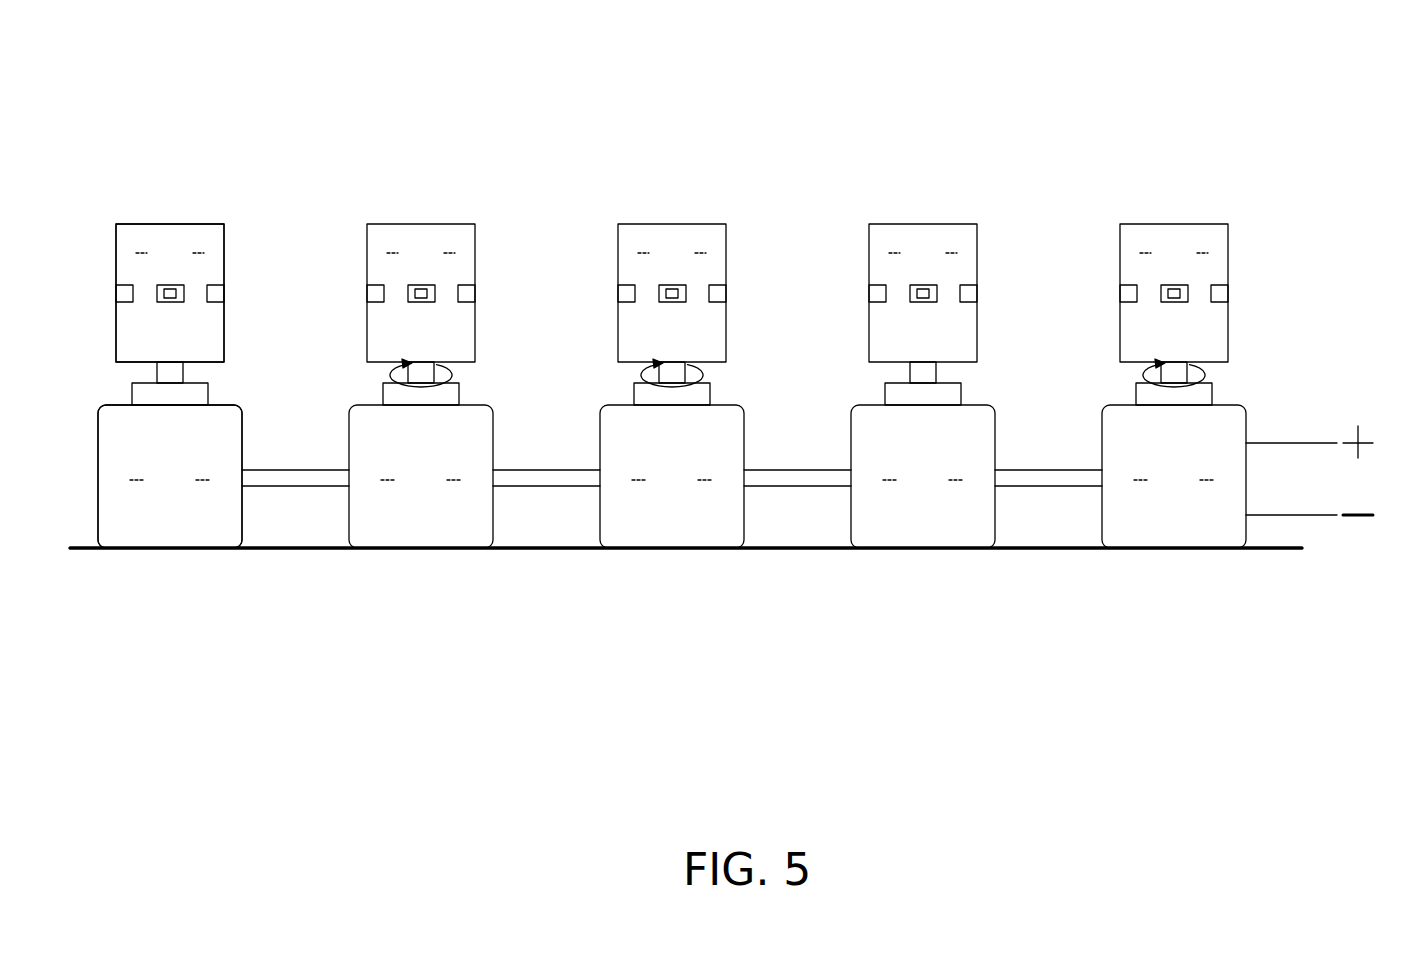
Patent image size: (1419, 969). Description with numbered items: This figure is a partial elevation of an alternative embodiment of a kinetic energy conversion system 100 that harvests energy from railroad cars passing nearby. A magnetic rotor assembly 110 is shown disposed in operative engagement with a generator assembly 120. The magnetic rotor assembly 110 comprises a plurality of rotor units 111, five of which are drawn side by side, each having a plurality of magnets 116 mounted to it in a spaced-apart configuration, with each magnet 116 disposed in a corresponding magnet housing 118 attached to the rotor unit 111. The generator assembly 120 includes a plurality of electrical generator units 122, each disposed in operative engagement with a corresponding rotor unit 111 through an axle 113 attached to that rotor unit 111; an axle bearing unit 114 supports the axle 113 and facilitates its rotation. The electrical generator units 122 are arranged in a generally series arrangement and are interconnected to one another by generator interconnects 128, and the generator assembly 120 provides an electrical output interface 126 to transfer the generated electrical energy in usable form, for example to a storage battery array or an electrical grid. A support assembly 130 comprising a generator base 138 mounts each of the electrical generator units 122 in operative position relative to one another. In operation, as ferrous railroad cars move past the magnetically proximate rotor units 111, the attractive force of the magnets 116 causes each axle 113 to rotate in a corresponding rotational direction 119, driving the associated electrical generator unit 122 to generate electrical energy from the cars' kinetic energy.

The kinetic energy conversion system 100 is at (1249, 98).
The magnetic rotor assembly 110 is at (67, 208).
The rotor unit 111 is at (672, 293).
The axle 113 is at (183, 372).
The axle bearing unit 114 is at (208, 396).
The magnet 116 is at (428, 293).
The magnet housing 118 is at (620, 296).
The rotational direction 119 is at (392, 378).
The generator assembly 120 is at (68, 442).
The electrical generator unit 122 is at (672, 476).
The electrical output interface 126 is at (1282, 443).
The generator interconnect 128 is at (300, 470).
The support assembly 130 is at (1340, 578).
The generator base 138 is at (1090, 550).